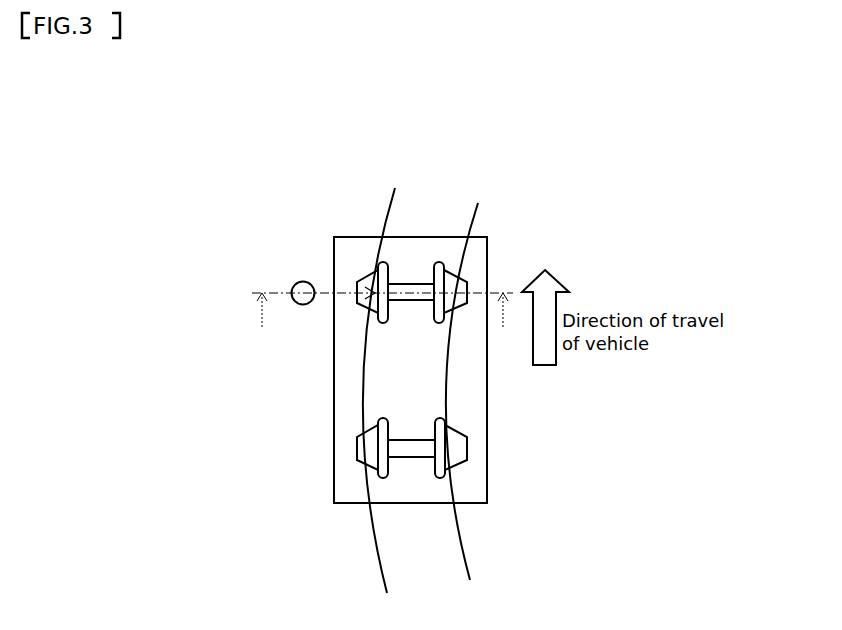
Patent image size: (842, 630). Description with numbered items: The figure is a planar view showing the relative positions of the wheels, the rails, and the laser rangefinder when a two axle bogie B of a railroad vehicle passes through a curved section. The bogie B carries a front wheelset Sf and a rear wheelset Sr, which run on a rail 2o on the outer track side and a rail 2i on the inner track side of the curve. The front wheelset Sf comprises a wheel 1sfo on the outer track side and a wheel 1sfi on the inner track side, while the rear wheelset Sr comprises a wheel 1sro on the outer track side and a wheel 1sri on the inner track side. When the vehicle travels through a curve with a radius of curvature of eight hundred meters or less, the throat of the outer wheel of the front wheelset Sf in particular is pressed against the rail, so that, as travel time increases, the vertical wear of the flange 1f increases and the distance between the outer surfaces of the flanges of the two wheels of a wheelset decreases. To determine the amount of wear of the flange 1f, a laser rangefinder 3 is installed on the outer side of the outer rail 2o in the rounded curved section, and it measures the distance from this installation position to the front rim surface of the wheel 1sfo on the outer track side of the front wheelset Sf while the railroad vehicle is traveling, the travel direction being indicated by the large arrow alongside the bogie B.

The bogie B is at (473, 490).
The rail on outer track side 2o is at (388, 213).
The rail on inner track side 2i is at (474, 222).
The front wheelset Sf is at (412, 292).
The rear wheelset Sr is at (411, 450).
The flange 1f is at (440, 325).
The wheel on outer track side of front wheelset 1sfo is at (368, 310).
The wheel on inner track side of front wheelset 1sfi is at (457, 290).
The wheel on outer track side of rear wheelset 1sro is at (362, 448).
The wheel on inner track side of rear wheelset 1sri is at (458, 448).
The laser rangefinder 3 is at (303, 281).